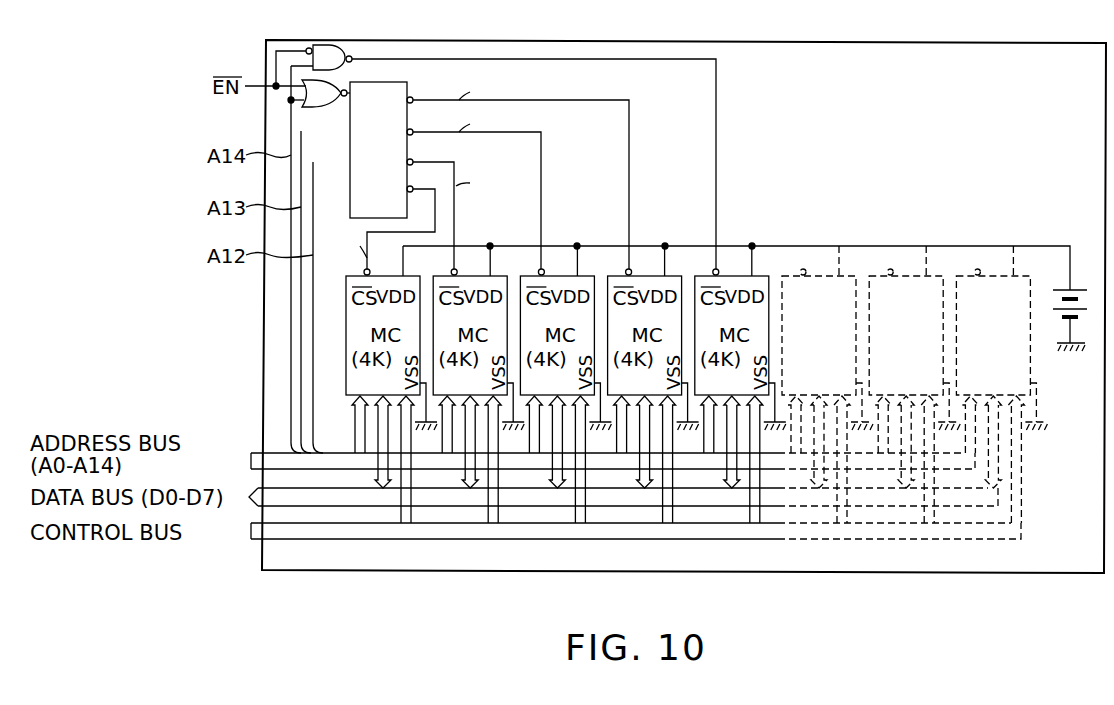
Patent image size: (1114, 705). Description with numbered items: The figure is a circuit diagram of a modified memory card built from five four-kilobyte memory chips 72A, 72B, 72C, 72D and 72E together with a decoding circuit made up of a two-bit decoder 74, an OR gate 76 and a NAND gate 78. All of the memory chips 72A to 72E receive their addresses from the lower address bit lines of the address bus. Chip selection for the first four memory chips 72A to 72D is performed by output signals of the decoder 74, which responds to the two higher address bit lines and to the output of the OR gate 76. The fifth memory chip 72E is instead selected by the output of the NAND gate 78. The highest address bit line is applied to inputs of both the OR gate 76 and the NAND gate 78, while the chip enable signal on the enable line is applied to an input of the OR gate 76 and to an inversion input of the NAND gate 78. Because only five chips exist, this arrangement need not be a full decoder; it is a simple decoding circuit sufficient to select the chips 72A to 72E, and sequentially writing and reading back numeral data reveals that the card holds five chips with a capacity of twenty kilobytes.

The memory chip 72A is at (410, 276).
The memory chip 72B is at (502, 276).
The memory chip 72C is at (585, 276).
The memory chip 72D is at (674, 276).
The memory chip 72E is at (762, 276).
The 2-bit decoder 74 is at (396, 84).
The OR gate 76 is at (332, 101).
The NAND gate 78 is at (329, 52).